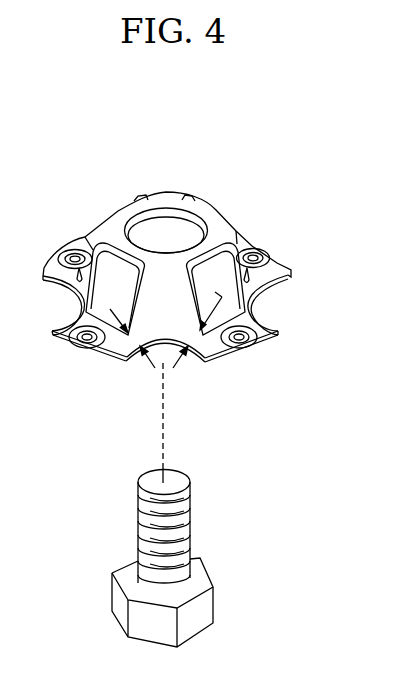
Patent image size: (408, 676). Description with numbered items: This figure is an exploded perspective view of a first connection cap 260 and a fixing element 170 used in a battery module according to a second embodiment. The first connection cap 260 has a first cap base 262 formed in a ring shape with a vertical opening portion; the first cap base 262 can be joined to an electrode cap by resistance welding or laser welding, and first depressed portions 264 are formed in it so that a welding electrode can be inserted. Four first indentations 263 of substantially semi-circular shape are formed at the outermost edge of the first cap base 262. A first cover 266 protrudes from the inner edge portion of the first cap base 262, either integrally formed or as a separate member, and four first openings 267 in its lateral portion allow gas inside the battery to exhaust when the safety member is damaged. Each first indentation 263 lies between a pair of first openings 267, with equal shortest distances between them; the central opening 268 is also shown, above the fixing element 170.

The first connection cap 260 is at (199, 274).
The first cap base 262 is at (290, 271).
The first indentations 263 is at (163, 346).
The first depressed portions 264 is at (262, 251).
The first cover 266 is at (118, 217).
The first openings 267 is at (278, 328).
The central opening 268 is at (152, 228).
The fixing element 170 is at (222, 608).